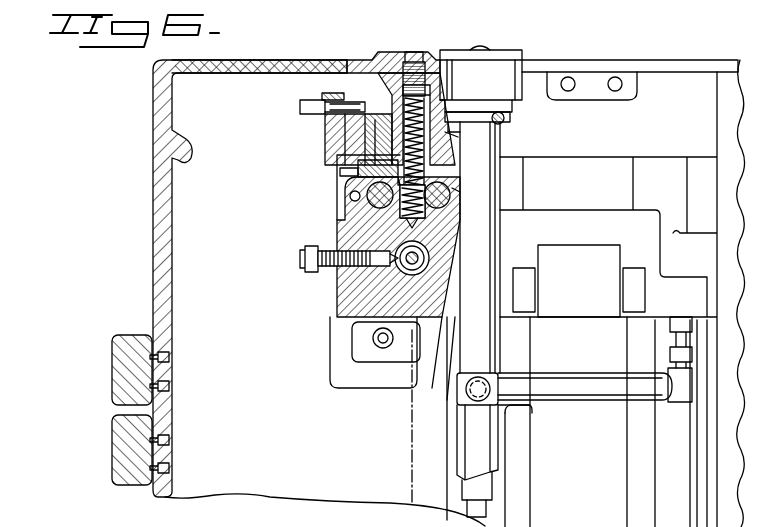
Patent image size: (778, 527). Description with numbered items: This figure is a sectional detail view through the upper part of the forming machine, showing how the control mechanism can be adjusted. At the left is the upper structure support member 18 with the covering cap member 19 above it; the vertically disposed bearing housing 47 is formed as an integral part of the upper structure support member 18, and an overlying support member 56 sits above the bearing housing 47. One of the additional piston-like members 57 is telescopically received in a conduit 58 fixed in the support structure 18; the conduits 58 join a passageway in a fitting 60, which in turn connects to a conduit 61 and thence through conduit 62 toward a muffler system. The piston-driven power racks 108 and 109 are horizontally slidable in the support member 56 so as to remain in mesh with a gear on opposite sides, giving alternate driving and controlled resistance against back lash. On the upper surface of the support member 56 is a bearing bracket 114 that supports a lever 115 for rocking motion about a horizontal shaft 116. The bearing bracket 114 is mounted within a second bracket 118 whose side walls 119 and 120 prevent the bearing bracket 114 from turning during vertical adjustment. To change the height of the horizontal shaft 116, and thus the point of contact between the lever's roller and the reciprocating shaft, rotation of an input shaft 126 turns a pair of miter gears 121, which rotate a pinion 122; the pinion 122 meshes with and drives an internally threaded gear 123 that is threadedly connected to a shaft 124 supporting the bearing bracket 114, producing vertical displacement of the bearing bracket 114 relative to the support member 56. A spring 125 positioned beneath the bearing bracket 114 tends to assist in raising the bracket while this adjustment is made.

The upper structure support member 18 is at (165, 281).
The covering cap member 19 is at (160, 108).
The bearing housing 47 is at (580, 469).
The support member 56 is at (348, 283).
The piston-like member 57 is at (492, 505).
The conduit 58 is at (500, 437).
The fitting 60 is at (586, 392).
The conduit 61 is at (483, 247).
The conduit 62 is at (493, 48).
The power rack 108 is at (452, 190).
The power rack 109 is at (350, 196).
The bearing bracket 114 is at (437, 62).
The lever 115 is at (416, 61).
The horizontal shaft 116 is at (410, 60).
The second bracket 118 is at (395, 72).
The side wall 119 is at (392, 100).
The side wall 120 is at (455, 117).
The miter gears 121 is at (340, 120).
The pinion 122 is at (355, 166).
The gear 123 is at (446, 136).
The shaft 124 is at (449, 128).
The spring 125 is at (356, 218).
The input shaft 126 is at (302, 103).